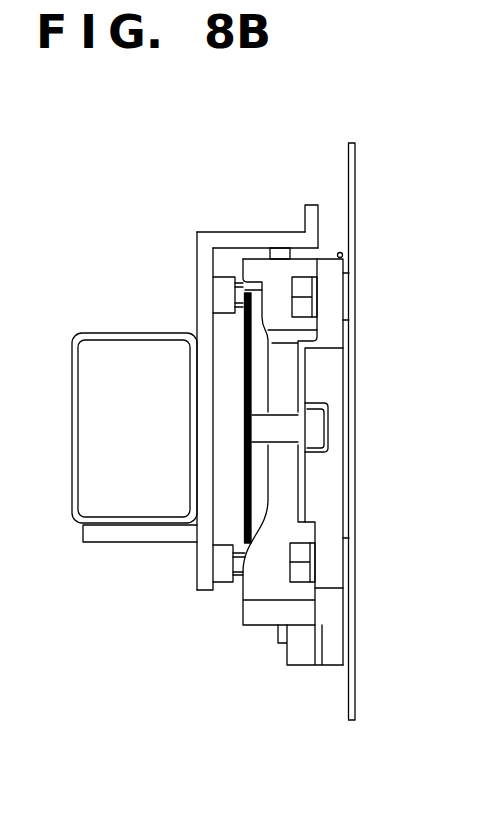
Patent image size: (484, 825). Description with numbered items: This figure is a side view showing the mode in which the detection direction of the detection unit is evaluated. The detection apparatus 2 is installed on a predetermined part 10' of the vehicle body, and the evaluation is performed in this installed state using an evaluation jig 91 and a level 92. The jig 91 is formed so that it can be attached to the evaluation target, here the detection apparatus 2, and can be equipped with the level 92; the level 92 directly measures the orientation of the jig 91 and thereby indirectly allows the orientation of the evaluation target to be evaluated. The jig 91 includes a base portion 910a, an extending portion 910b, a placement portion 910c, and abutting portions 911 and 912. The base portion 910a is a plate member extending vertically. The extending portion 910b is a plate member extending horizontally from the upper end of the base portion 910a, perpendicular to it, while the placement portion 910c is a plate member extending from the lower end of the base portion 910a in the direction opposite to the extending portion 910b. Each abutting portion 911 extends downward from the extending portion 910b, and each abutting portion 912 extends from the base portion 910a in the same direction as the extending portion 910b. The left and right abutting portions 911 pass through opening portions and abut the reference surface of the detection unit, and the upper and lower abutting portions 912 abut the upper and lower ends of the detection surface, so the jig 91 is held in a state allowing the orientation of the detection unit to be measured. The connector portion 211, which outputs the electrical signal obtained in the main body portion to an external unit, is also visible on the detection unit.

The evaluation jig 91 is at (175, 133).
The base portion 910a is at (200, 292).
The extending portion 910b is at (222, 240).
The placement portion 910c is at (125, 543).
The abutting portion 911 is at (283, 250).
The abutting portion 912 is at (226, 285).
The level 92 is at (77, 338).
The detection apparatus 2 is at (265, 618).
The connector portion 211 is at (300, 660).
The predetermined part 10' is at (351, 403).